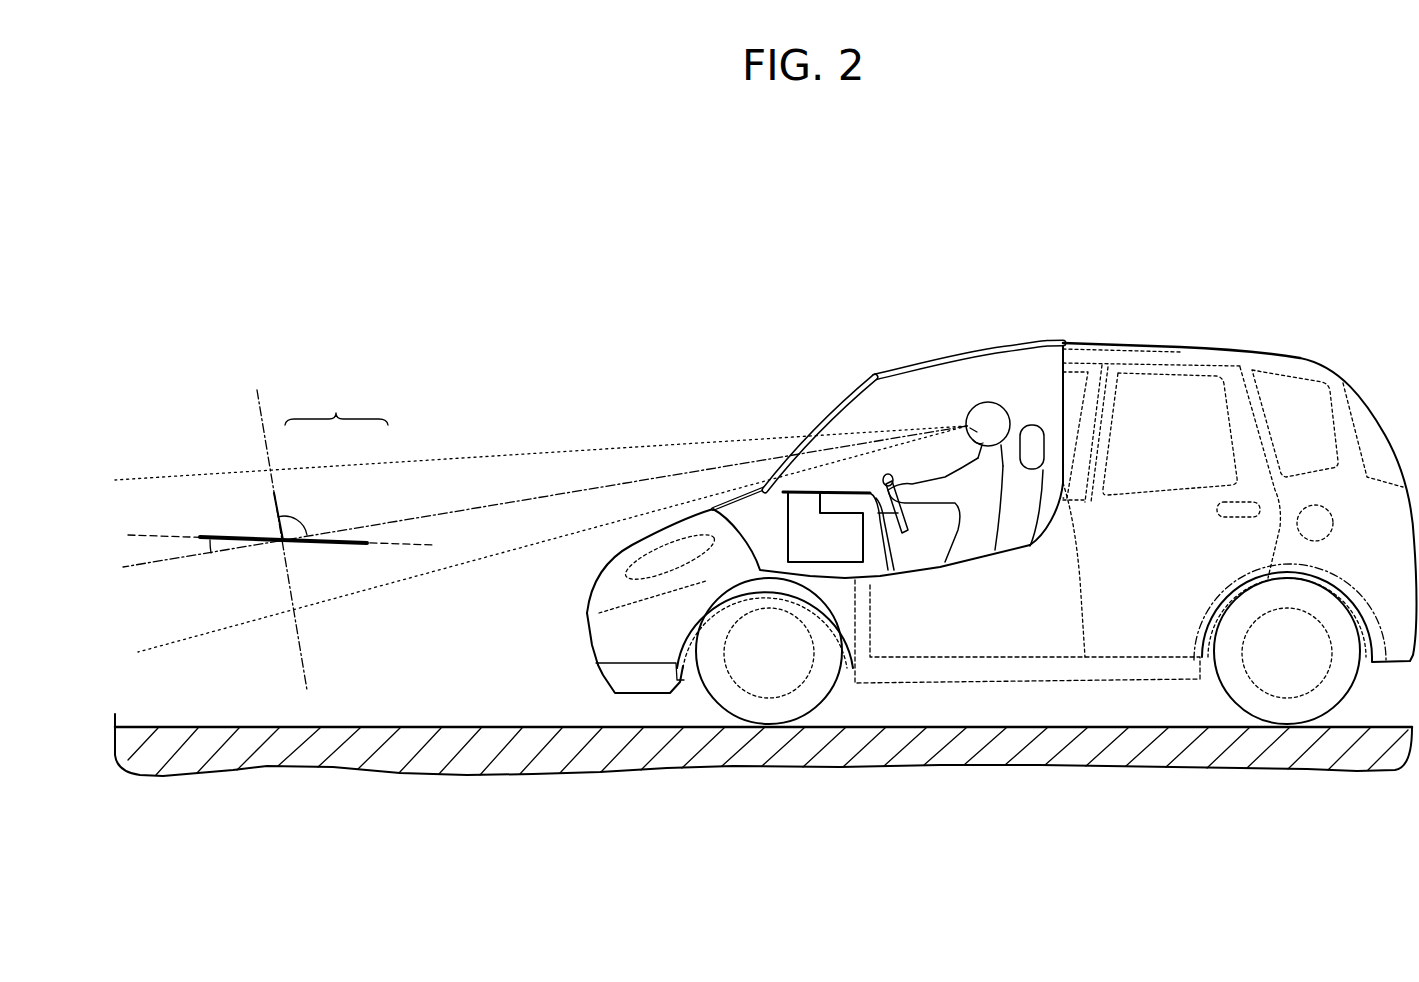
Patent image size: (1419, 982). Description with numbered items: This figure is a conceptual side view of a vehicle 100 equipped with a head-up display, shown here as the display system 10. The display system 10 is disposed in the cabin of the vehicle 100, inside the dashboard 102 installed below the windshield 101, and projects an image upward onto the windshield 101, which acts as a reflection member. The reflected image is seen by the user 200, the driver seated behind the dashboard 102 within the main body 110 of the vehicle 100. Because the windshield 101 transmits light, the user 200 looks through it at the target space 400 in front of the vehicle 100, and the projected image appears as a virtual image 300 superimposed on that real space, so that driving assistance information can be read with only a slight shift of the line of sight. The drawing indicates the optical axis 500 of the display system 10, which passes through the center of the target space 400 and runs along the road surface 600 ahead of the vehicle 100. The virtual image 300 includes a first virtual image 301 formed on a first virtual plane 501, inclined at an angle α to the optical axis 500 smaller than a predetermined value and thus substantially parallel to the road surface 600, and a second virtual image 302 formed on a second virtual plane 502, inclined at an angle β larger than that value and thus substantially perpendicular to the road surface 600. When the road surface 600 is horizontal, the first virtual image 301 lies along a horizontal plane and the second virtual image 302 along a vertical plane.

The display system 10 is at (790, 533).
The vehicle 100 is at (1321, 363).
The windshield 101 is at (838, 418).
The dashboard 102 is at (893, 553).
The main body 110 is at (1212, 345).
The user 200 is at (998, 412).
The virtual image 300 is at (336, 406).
The first virtual image 301 is at (350, 539).
The second virtual image 302 is at (278, 492).
The target space 400 is at (567, 451).
The optical axis 500 is at (160, 563).
The first virtual plane 501 is at (172, 534).
The second virtual plane 502 is at (257, 391).
The road surface 600 is at (456, 726).